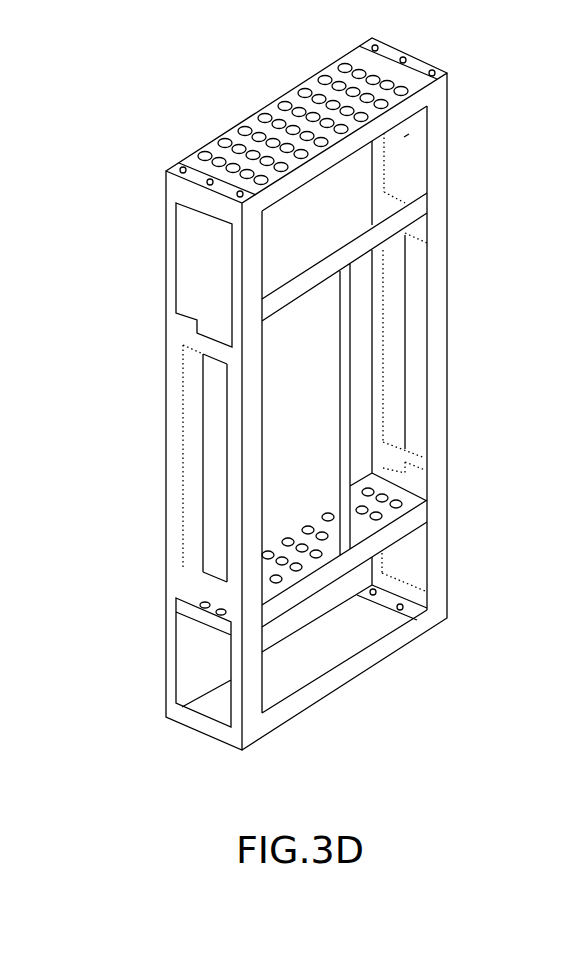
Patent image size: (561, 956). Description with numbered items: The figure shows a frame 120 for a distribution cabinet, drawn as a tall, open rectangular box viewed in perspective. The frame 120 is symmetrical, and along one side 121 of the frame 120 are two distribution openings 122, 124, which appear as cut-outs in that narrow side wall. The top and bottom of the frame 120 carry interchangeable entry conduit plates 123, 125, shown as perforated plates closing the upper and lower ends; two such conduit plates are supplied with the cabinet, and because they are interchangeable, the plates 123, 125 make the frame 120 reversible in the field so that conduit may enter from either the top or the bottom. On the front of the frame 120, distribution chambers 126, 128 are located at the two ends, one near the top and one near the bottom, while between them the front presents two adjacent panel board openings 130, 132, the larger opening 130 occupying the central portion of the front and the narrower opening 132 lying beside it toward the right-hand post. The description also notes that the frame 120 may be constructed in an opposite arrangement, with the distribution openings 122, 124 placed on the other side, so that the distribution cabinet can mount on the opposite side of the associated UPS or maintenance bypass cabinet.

The frame 120 is at (258, 112).
The side 121 is at (192, 466).
The distribution opening 122 is at (182, 289).
The top entry conduit plate 123 is at (440, 110).
The distribution opening 124 is at (415, 302).
The bottom entry conduit plate 125 is at (416, 552).
The distribution chamber 126 is at (428, 163).
The distribution chamber 128 is at (380, 640).
The panel board opening 130 is at (266, 394).
The panel board opening 132 is at (426, 358).